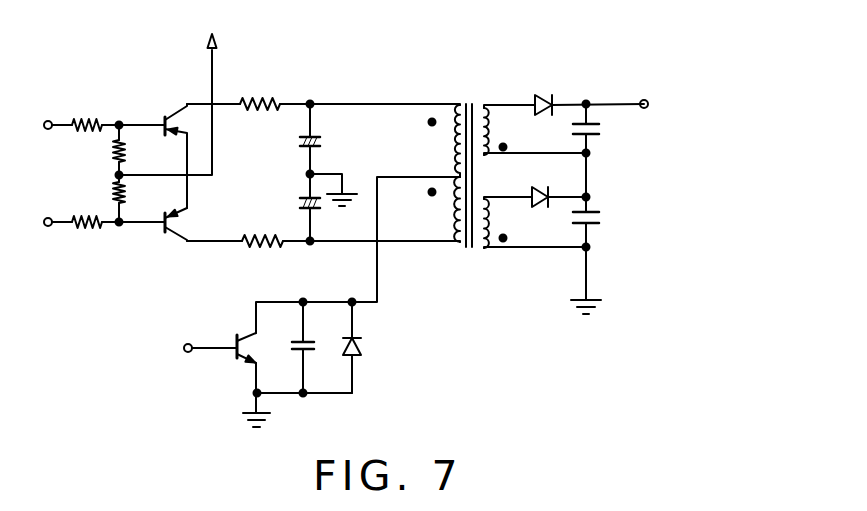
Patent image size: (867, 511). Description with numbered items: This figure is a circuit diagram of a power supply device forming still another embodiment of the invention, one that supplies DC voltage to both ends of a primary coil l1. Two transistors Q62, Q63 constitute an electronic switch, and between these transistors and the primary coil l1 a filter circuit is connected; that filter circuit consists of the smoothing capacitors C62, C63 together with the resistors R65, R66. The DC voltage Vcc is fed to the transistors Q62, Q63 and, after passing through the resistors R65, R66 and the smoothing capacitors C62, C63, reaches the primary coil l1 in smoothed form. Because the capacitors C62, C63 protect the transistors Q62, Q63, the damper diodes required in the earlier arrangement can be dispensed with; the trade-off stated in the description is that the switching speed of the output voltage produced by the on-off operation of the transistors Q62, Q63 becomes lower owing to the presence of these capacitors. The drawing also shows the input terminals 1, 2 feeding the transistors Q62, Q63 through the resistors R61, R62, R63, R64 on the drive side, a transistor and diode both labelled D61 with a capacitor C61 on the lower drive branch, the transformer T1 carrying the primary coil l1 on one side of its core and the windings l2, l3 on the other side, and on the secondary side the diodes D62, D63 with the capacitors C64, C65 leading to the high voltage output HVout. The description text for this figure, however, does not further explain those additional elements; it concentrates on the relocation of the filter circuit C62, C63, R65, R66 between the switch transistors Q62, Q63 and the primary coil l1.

The input terminal 1 is at (185, 343).
The high voltage output terminal 2 is at (644, 99).
The DC voltage Vcc is at (213, 30).
The high voltage output HVout is at (695, 102).
The resistor R61 is at (85, 117).
The resistor R62 is at (88, 217).
The resistor R63 is at (113, 150).
The resistor R64 is at (125, 192).
The resistor R65 is at (262, 97).
The resistor R66 is at (260, 247).
The transistor Q62 is at (175, 116).
The transistor Q63 is at (174, 234).
The capacitor C61 is at (290, 352).
The smoothing capacitor C62 is at (322, 143).
The smoothing capacitor C63 is at (298, 203).
The capacitor C64 is at (600, 128).
The capacitor C65 is at (600, 217).
The transistor and diode D61 is at (242, 340).
The diode D62 is at (543, 95).
The diode D63 is at (516, 185).
The transformer T1 is at (471, 102).
The primary coil l1 is at (452, 243).
The secondary winding l2 is at (495, 123).
The secondary winding l3 is at (488, 242).